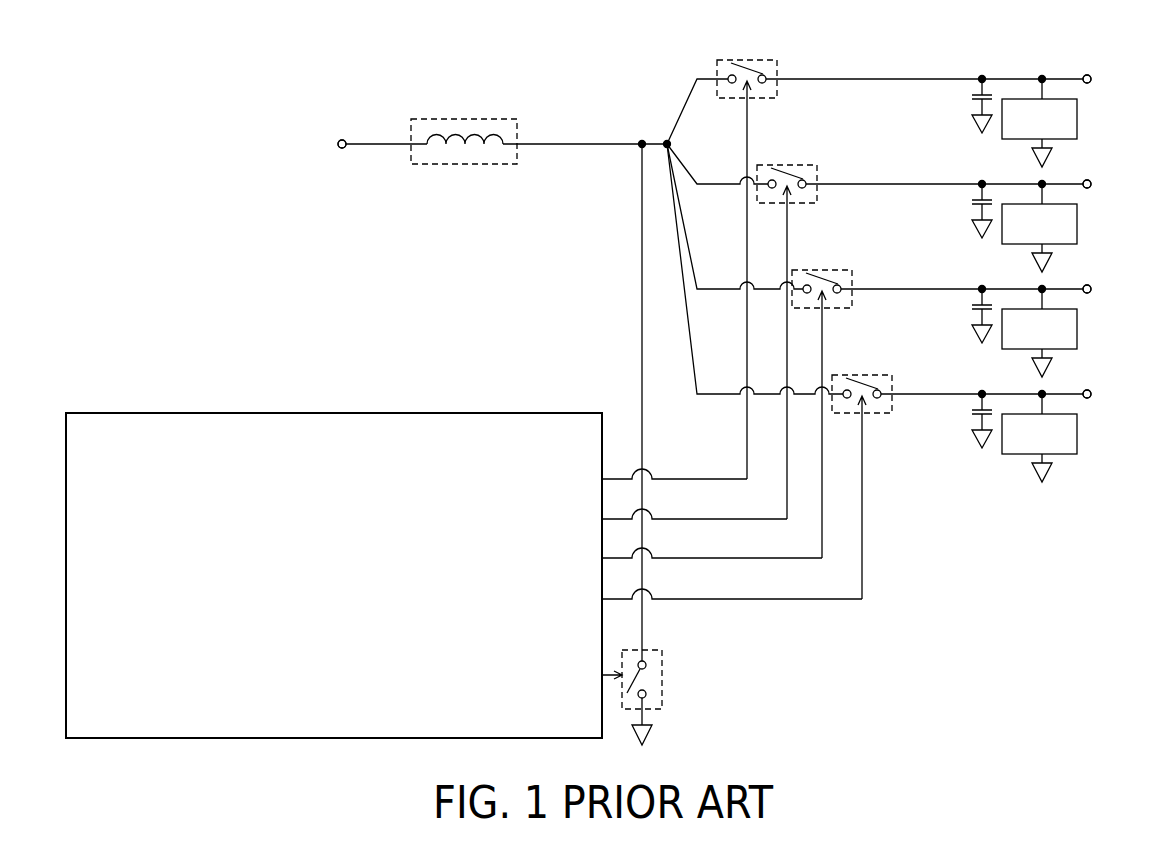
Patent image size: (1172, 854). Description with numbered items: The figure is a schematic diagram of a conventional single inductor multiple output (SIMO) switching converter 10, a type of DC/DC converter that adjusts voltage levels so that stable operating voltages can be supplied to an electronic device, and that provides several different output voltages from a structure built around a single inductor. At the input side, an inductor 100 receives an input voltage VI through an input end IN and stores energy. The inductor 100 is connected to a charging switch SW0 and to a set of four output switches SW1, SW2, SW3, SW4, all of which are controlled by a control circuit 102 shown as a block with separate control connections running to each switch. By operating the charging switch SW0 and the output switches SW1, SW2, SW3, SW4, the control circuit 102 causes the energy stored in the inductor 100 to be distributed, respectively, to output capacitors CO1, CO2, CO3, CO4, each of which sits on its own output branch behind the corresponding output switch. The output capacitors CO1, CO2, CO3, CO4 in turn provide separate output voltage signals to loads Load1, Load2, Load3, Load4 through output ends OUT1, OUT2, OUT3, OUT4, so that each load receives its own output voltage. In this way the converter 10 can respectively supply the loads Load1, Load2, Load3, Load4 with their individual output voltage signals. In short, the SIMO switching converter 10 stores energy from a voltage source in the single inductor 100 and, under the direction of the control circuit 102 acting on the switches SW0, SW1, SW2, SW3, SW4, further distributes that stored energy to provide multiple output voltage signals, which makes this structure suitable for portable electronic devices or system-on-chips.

The SIMO switching converter 10 is at (160, 100).
The inductor 100 is at (487, 119).
The control circuit 102 is at (401, 413).
The input end IN is at (342, 139).
The input voltage VI is at (325, 145).
The charging switch SW0 is at (662, 680).
The output switch SW1 is at (777, 61).
The output switch SW2 is at (817, 166).
The output switch SW3 is at (852, 271).
The output switch SW4 is at (892, 376).
The output capacitor CO1 is at (972, 97).
The output capacitor CO2 is at (972, 202).
The output capacitor CO3 is at (972, 307).
The output capacitor CO4 is at (972, 412).
The load Load1 is at (1039, 122).
The load Load2 is at (1039, 227).
The load Load3 is at (1039, 332).
The load Load4 is at (1039, 437).
The output end OUT1 is at (1089, 83).
The output end OUT2 is at (1089, 188).
The output end OUT3 is at (1089, 293).
The output end OUT4 is at (1089, 398).